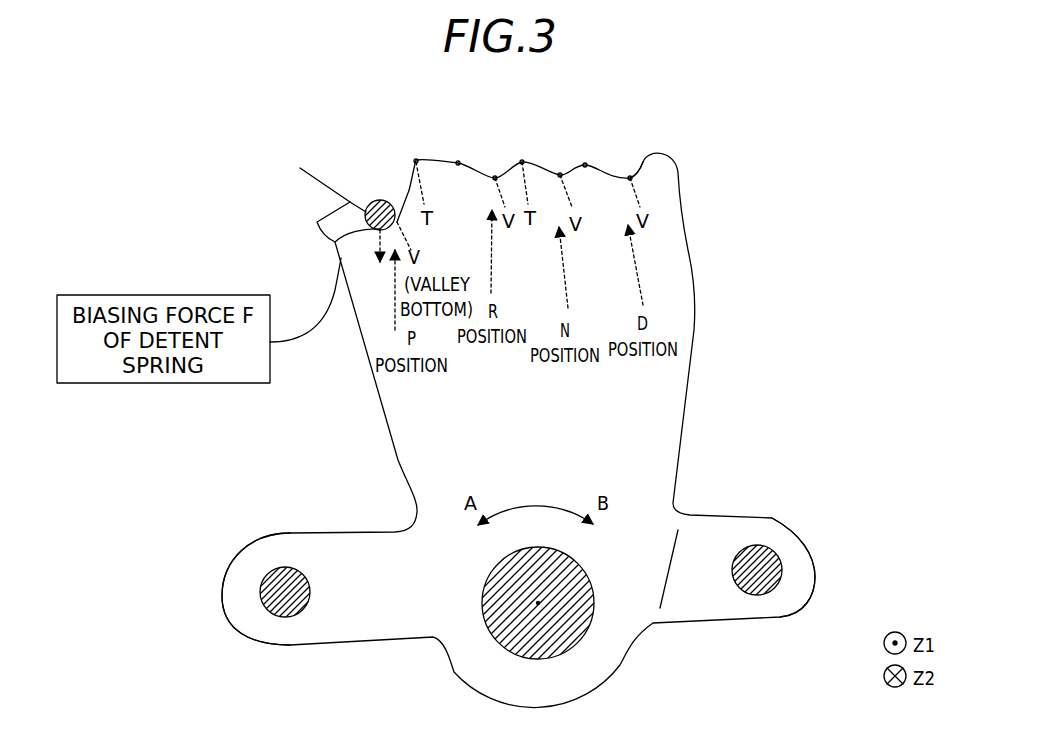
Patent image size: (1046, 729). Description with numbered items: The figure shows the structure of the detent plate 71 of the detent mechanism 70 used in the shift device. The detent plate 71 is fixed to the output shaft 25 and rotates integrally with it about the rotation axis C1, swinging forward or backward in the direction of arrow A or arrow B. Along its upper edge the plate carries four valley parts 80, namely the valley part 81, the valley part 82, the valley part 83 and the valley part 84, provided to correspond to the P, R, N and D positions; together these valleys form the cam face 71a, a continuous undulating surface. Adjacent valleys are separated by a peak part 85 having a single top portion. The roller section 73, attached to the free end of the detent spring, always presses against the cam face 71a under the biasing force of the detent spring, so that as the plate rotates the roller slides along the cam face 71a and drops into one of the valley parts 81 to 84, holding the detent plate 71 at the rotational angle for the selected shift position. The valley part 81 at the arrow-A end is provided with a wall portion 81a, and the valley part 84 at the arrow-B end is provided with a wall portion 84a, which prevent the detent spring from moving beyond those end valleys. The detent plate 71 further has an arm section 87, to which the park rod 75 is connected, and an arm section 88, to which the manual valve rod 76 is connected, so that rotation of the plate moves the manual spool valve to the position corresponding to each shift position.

The detent mechanism 70 is at (798, 150).
The detent plate 71 is at (680, 224).
The cam face 71a is at (457, 158).
The roller section 73 is at (365, 222).
The park rod 75 is at (781, 575).
The manual valve rod 76 is at (258, 601).
The valley parts 80 is at (383, 156).
The valley part 81 is at (366, 181).
The wall portion 81a is at (307, 178).
The valley part 82 is at (492, 165).
The valley part 83 is at (558, 166).
The valley part 84 is at (623, 166).
The wall portion 84a is at (642, 162).
The peak part 85 is at (438, 159).
The arm section 87 is at (791, 545).
The arm section 88 is at (258, 553).
The output shaft 25 is at (578, 620).
The rotation axis C1 is at (540, 602).